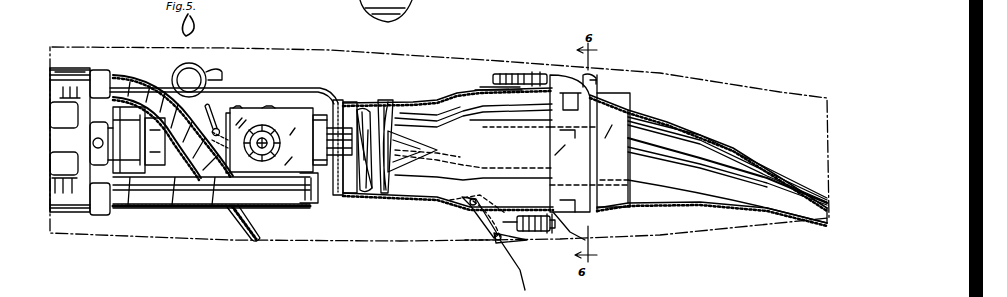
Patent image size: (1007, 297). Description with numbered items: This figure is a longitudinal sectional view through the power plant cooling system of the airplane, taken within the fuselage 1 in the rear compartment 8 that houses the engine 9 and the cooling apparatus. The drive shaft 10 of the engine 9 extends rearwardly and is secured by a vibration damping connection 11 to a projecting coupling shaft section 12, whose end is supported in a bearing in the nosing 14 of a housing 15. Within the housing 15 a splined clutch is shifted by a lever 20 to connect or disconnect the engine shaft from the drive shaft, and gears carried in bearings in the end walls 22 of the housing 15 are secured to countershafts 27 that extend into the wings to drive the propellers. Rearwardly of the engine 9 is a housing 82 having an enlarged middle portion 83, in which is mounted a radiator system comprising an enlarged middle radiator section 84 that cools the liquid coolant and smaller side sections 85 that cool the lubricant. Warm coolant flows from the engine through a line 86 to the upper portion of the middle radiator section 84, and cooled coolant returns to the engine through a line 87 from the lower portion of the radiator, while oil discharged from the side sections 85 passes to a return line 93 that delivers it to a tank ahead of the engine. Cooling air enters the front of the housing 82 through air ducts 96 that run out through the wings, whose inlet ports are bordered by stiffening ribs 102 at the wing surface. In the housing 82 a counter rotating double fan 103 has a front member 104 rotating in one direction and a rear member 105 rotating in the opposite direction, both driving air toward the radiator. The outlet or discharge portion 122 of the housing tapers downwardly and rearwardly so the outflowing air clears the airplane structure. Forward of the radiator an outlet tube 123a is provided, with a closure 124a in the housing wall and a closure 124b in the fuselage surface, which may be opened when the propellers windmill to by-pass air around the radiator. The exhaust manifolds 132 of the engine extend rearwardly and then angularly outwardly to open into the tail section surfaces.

The fuselage 1 is at (438, 58).
The rear compartment 8 is at (80, 233).
The engine 9 is at (63, 103).
The drive shaft 10 is at (135, 170).
The vibration damping connection 11 is at (165, 165).
The coupling shaft section 12 is at (198, 180).
The nosing 14 is at (222, 112).
The housing 15 is at (323, 149).
The lever 20 is at (213, 110).
The end walls 22 is at (264, 128).
The countershafts 27 is at (269, 115).
The housing 82 is at (427, 205).
The enlarged middle portion 83 is at (461, 94).
The middle radiator section 84 is at (602, 205).
The side sections 85 is at (578, 235).
The line 86 is at (529, 74).
The line 87 is at (522, 240).
The return line 93 is at (548, 122).
The air ducts 96 is at (350, 102).
The stiffening ribs 102 is at (410, 5).
The counter rotating double fan 103 is at (388, 102).
The front member 104 is at (363, 192).
The rear member 105 is at (403, 175).
The outlet or discharge portion 122 is at (807, 208).
The outlet tube 123a is at (502, 240).
The closure 124a is at (493, 205).
The closure 124b is at (524, 268).
The exhaust manifolds 132 is at (125, 76).